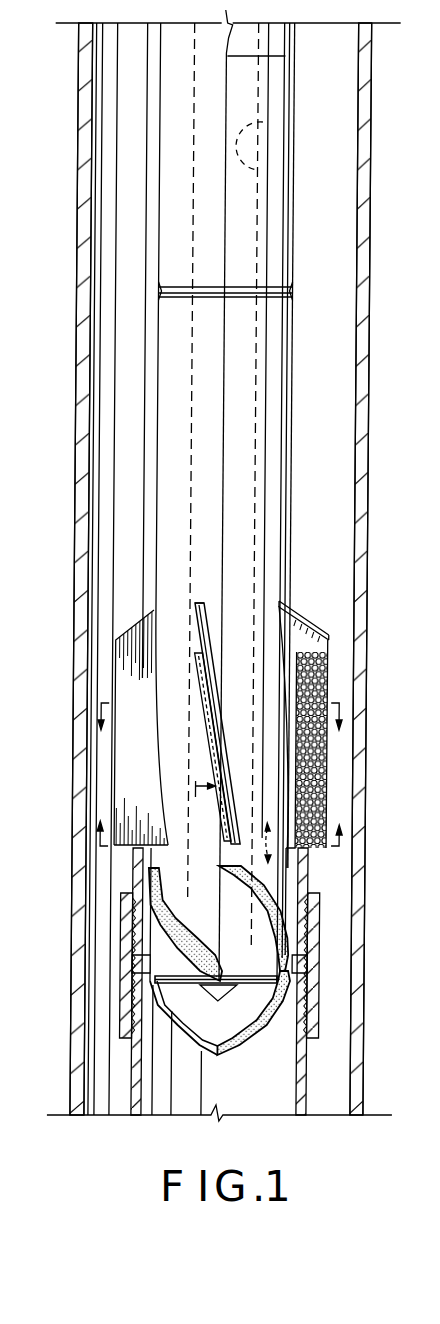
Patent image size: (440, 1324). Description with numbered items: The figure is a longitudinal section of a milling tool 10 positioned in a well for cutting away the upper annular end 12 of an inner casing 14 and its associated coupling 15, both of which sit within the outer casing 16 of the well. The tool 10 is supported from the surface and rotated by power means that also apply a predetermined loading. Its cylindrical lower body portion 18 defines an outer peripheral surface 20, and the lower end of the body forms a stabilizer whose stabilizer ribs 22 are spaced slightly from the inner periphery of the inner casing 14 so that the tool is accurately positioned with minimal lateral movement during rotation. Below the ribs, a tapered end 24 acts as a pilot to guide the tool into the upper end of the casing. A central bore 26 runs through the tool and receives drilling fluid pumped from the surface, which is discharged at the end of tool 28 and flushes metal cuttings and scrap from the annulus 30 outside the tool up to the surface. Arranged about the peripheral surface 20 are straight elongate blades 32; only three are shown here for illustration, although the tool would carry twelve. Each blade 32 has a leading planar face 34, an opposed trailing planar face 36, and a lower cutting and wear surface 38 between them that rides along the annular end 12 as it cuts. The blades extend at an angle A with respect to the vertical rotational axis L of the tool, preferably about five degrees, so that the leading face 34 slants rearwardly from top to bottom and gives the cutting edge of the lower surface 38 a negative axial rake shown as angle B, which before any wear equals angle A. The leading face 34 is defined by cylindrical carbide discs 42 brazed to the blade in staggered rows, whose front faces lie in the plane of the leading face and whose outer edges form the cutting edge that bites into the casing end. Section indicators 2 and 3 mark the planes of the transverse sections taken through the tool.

The milling tool 10 is at (300, 323).
The annular end of inner casing 12 is at (144, 832).
The inner casing 14 is at (139, 870).
The coupling 15 is at (328, 1010).
The outer casing 16 is at (365, 405).
The lower body portion 18 is at (271, 618).
The outer peripheral surface 20 is at (172, 585).
The stabilizer ribs 22 is at (179, 915).
The tapered end 24 is at (255, 1007).
The central bore 26 is at (262, 115).
The end of tool 28 is at (231, 977).
The annulus 30 is at (320, 203).
The blades 32 is at (107, 667).
The leading planar face 34 is at (219, 738).
The trailing planar face 36 is at (135, 643).
The lower cutting and wear surface 38 is at (167, 843).
The cylindrical carbide discs 42 is at (331, 773).
The vertical rotational axis L is at (285, 48).
The blade angle A is at (204, 811).
The negative axial rake angle B is at (297, 838).
The section line 2- 2 is at (219, 820).
The section line 3- 3 is at (220, 729).